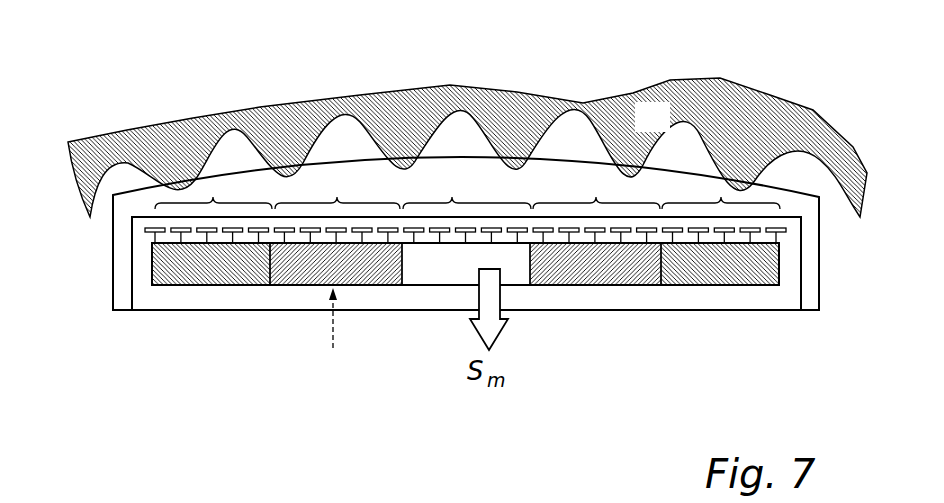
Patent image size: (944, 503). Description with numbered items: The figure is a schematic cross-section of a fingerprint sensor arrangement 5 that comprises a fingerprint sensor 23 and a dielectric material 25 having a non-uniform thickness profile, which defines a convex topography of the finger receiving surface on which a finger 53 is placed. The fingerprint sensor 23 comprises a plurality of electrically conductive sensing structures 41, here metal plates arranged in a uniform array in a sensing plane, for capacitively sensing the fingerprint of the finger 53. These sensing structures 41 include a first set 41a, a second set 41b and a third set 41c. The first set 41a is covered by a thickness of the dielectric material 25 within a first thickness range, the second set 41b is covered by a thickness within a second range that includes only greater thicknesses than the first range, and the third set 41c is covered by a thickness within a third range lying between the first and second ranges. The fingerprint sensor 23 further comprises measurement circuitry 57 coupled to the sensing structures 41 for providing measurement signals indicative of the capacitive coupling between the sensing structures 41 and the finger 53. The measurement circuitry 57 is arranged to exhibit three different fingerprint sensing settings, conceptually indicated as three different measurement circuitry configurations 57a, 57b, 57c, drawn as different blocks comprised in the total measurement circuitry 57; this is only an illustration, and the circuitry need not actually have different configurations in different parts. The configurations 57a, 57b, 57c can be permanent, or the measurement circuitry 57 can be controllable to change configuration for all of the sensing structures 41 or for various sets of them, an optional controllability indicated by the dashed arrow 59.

The fingerprint sensor arrangement 5 is at (451, 298).
The fingerprint sensor 23 is at (792, 275).
The dielectric material 25 is at (319, 194).
The electrically conductive sensing structures 41 is at (460, 230).
The first set of sensing structures 41a is at (213, 200).
The second set of sensing structures 41b is at (451, 202).
The third set of sensing structures 41c is at (337, 202).
The finger 53 is at (668, 128).
The measurement circuitry 57 is at (461, 345).
The first measurement circuitry configuration 57a is at (197, 268).
The second measurement circuitry configuration 57b is at (448, 275).
The third measurement circuitry configuration 57c is at (387, 275).
The dashed arrow 59 is at (332, 334).